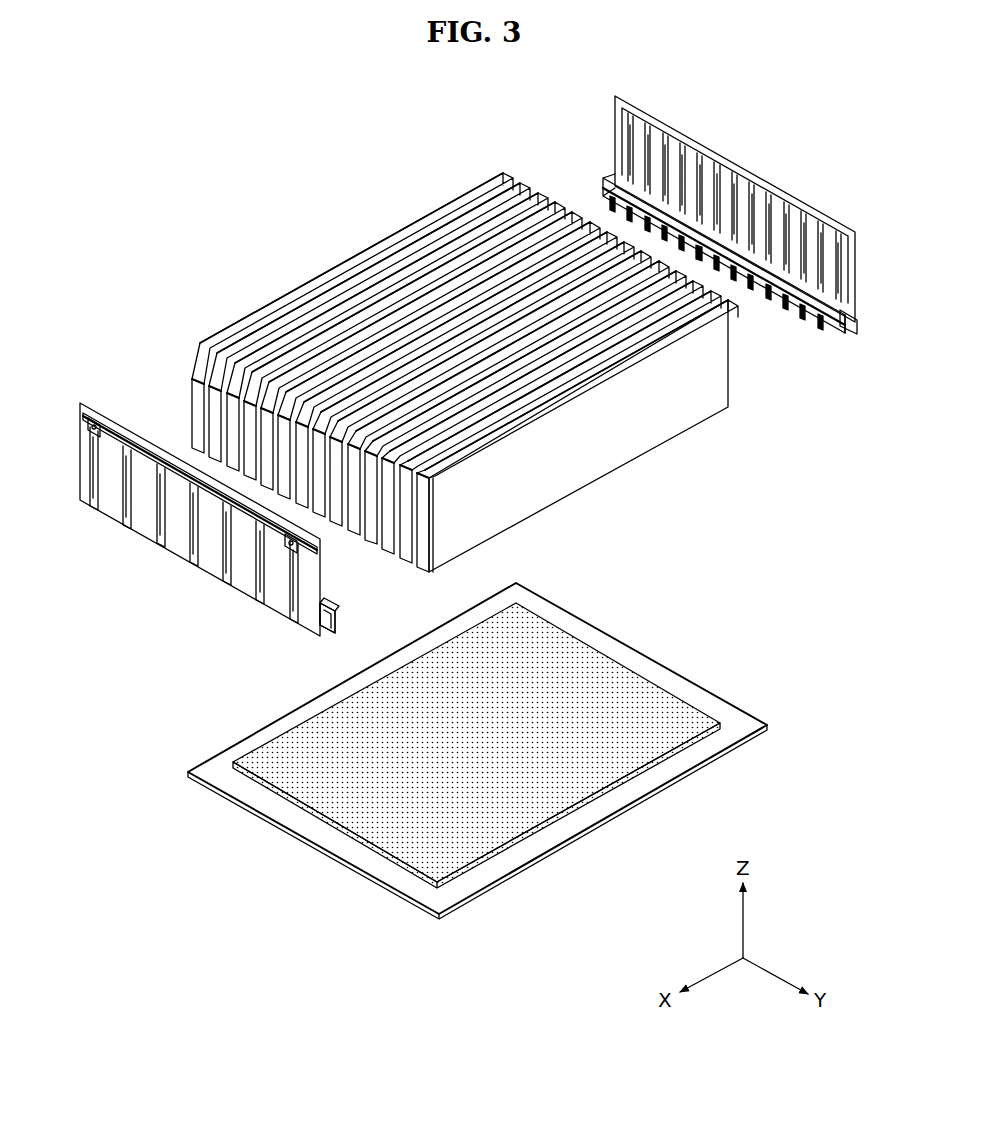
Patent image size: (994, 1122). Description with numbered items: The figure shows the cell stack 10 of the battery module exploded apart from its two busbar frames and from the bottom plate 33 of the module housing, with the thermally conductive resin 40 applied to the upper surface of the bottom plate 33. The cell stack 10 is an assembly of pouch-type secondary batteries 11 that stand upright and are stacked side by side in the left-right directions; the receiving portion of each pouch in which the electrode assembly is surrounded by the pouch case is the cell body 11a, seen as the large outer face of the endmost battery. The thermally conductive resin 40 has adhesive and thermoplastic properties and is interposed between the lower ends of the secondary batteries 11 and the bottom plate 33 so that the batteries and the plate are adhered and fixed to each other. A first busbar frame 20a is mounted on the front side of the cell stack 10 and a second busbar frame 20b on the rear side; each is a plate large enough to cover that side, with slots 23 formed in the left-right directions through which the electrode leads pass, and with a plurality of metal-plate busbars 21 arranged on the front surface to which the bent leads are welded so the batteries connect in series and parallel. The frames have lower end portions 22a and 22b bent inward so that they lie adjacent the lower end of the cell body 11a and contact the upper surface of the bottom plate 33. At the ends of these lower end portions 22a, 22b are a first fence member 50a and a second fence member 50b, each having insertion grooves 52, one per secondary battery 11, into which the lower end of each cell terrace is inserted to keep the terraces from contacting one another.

The cell stack 10 is at (339, 243).
The secondary battery 11 is at (304, 291).
The cell body 11a is at (625, 432).
The first busbar frame 20a is at (101, 533).
The second busbar frame 20b is at (801, 168).
The busbar 21 is at (758, 173).
The lower end portion of first busbar frame 22a is at (325, 636).
The lower end portion of second busbar frame 22b is at (849, 333).
The slot 23 is at (830, 265).
The bottom plate 33 is at (588, 819).
The thermally conductive resin 40 is at (303, 753).
The first fence member 50a is at (348, 607).
The second fence member 50b is at (802, 328).
The insertion groove 52 is at (771, 292).